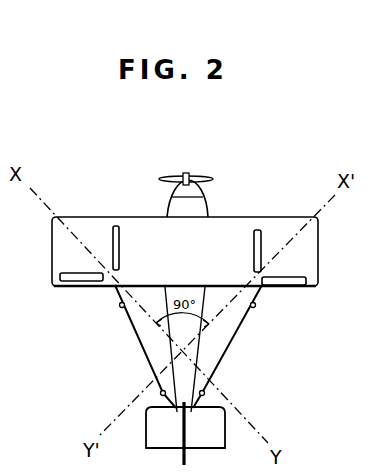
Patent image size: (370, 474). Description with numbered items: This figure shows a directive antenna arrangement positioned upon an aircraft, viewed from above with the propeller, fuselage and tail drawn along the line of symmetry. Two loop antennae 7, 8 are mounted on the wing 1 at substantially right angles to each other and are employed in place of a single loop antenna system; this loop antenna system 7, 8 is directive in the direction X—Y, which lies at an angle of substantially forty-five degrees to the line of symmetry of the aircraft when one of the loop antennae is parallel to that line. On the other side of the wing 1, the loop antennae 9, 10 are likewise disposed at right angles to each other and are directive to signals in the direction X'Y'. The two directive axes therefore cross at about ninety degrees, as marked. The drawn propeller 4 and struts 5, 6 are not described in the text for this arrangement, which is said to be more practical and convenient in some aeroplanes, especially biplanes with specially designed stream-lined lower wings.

The wing 1 is at (97, 216).
The propeller and nose of fuselage 4 is at (190, 188).
The right strut 5 is at (229, 358).
The left strut 6 is at (139, 352).
The loop antenna 7 is at (88, 285).
The loop antenna 8 is at (124, 252).
The loop antenna 9 is at (259, 235).
The loop antenna 10 is at (281, 287).